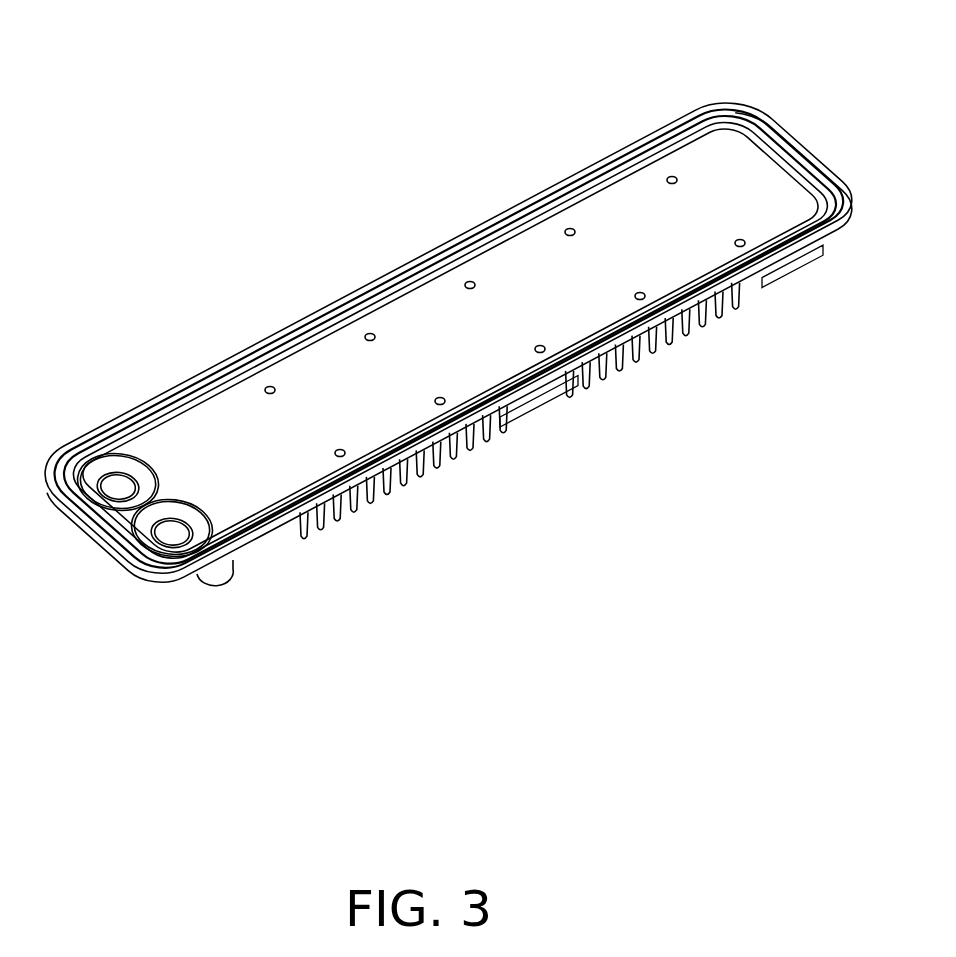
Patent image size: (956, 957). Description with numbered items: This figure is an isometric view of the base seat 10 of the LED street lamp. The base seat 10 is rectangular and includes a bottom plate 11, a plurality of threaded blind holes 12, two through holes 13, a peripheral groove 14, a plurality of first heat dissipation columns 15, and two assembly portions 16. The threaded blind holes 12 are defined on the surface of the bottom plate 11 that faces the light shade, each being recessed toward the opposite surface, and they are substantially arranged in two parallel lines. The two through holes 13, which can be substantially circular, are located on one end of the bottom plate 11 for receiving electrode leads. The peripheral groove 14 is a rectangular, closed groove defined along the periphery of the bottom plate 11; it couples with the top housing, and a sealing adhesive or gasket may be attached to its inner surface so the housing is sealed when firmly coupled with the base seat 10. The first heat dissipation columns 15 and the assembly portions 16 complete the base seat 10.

The base seat 10 is at (440, 70).
The bottom plate 11 is at (716, 160).
The threaded blind holes 12 is at (566, 228).
The through holes 13 is at (120, 490).
The peripheral groove 14 is at (208, 390).
The first heat dissipation columns 15 is at (444, 470).
The assembly portions 16 is at (219, 580).